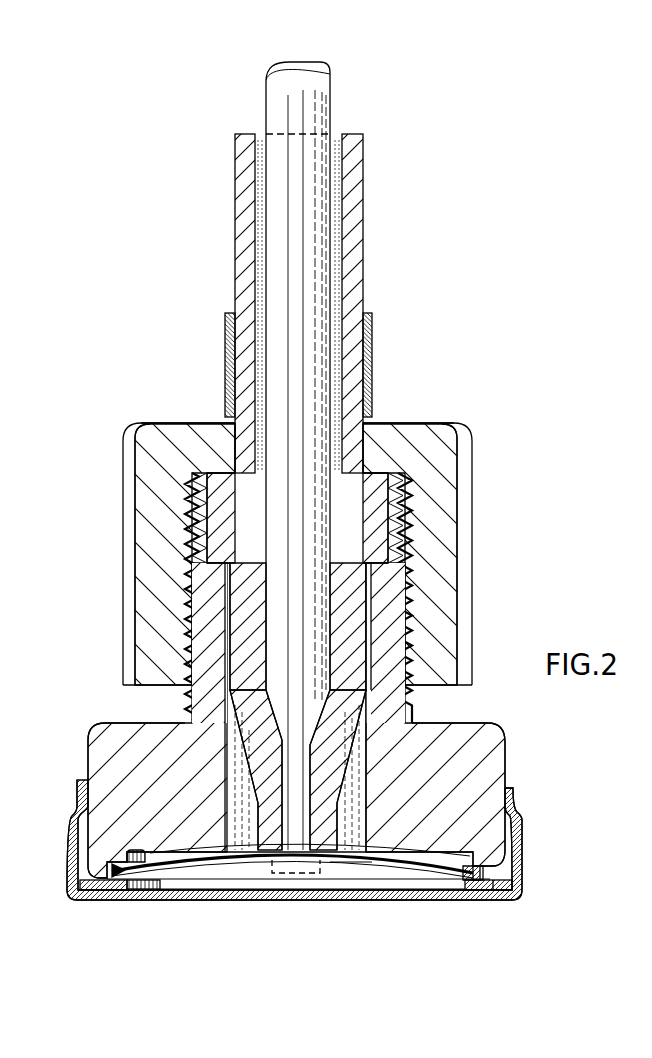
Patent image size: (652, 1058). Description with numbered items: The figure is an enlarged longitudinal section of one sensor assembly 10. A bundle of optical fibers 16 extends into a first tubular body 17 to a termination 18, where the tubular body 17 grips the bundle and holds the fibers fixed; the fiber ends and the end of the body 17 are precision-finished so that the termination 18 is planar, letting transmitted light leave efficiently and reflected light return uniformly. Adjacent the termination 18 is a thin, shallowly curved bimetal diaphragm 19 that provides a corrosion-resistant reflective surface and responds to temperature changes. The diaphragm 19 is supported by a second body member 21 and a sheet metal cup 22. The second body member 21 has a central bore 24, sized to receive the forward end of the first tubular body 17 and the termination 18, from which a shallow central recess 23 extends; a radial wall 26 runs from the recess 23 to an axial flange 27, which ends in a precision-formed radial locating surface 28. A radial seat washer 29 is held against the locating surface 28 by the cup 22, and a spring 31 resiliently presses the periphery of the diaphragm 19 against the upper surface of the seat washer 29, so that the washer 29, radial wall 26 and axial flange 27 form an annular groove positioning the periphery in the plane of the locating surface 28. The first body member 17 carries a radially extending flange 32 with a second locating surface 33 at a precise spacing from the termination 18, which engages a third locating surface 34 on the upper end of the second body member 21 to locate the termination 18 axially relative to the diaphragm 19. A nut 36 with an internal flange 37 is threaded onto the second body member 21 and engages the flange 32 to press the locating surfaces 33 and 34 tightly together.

The sensor assembly 10 is at (518, 727).
The bundle of optical fibers 16 is at (328, 108).
The first tubular body 17 is at (353, 308).
The termination 18 is at (295, 875).
The diaphragm 19 is at (350, 865).
The second body member 21 is at (497, 776).
The sheet metal cup 22 is at (521, 850).
The central recess 23 is at (432, 857).
The central bore 24 is at (366, 772).
The radial wall 26 is at (482, 853).
The axial flange 27 is at (500, 872).
The radial locating surface 28 is at (490, 893).
The seat washer 29 is at (119, 889).
The spring 31 is at (400, 852).
The radially extending flange 32 is at (380, 515).
The second locating surface 33 is at (390, 567).
The third locating surface 34 is at (228, 553).
The nut 36 is at (447, 612).
The internal flange 37 is at (377, 442).